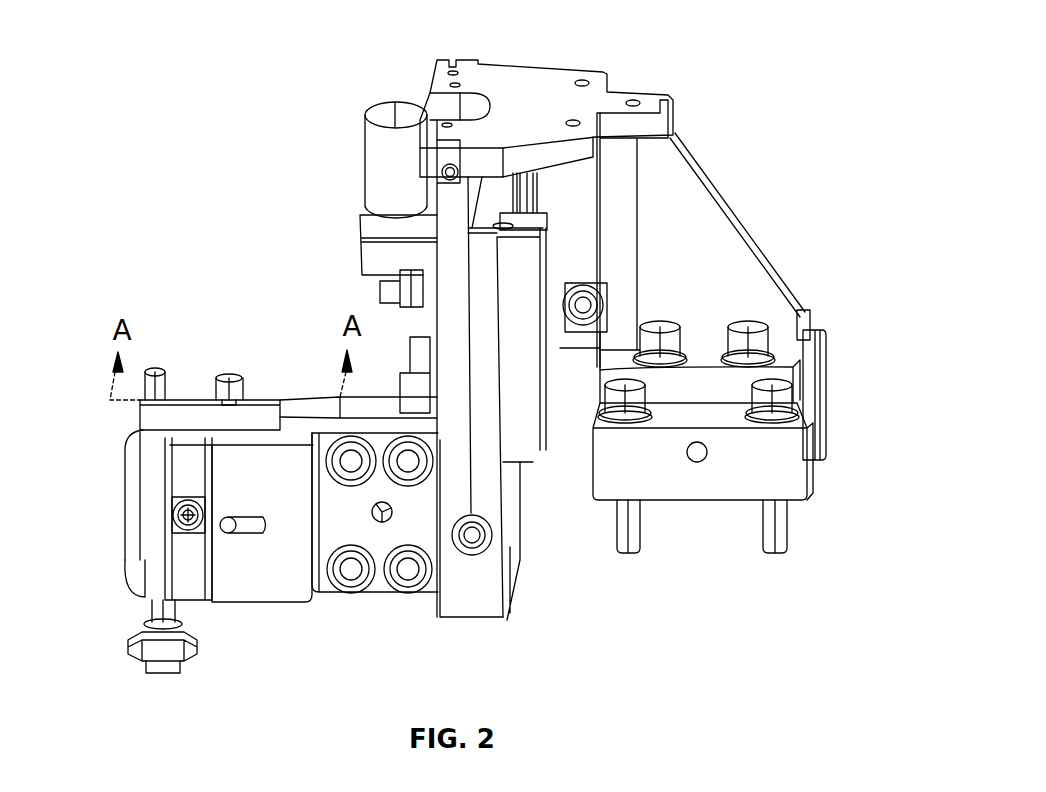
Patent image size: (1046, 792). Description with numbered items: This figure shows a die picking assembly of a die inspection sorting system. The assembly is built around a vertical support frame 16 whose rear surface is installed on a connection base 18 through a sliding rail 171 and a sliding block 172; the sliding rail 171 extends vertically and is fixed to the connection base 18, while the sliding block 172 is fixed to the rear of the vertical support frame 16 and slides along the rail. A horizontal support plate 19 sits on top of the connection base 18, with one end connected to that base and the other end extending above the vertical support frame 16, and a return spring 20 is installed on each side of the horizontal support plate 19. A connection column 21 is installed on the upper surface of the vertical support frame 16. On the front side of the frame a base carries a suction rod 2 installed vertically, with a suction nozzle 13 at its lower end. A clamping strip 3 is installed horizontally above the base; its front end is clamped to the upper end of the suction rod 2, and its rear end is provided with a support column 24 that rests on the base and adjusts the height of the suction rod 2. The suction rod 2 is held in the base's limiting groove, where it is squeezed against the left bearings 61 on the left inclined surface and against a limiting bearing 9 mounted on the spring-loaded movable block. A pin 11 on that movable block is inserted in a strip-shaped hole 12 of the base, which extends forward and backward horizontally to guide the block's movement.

The suction rod 2 is at (163, 372).
The clamping strip 3 is at (165, 423).
The limiting bearing 9 is at (170, 520).
The pin 11 is at (228, 523).
The strip-shaped hole 12 is at (290, 535).
The suction nozzle 13 is at (160, 652).
The vertical support frame 16 is at (475, 588).
The connection base 18 is at (730, 295).
The horizontal support plate 19 is at (540, 80).
The return spring 20 is at (450, 272).
The connection column 21 is at (388, 175).
The support column 24 is at (227, 388).
The left bearing 61 is at (135, 580).
The sliding rail 171 is at (537, 187).
The sliding block 172 is at (520, 310).